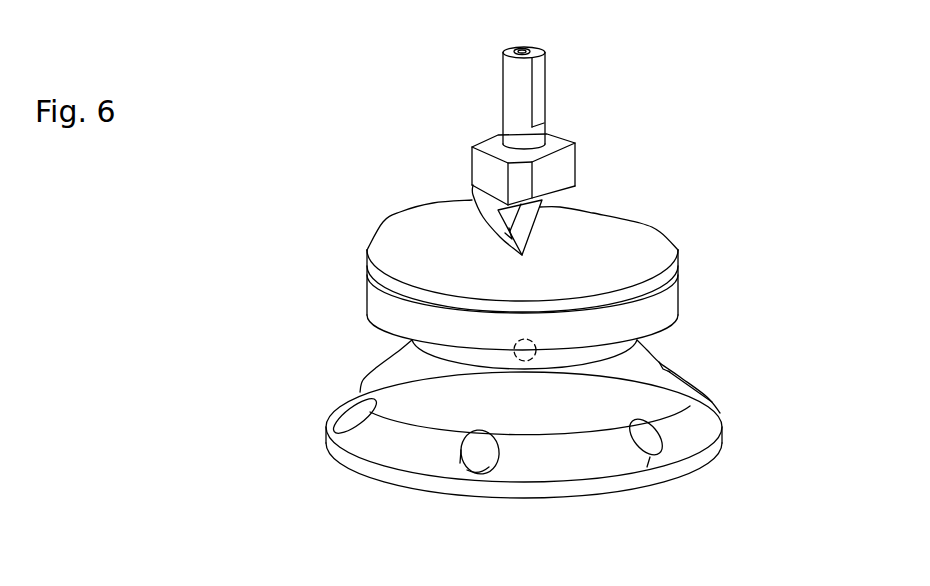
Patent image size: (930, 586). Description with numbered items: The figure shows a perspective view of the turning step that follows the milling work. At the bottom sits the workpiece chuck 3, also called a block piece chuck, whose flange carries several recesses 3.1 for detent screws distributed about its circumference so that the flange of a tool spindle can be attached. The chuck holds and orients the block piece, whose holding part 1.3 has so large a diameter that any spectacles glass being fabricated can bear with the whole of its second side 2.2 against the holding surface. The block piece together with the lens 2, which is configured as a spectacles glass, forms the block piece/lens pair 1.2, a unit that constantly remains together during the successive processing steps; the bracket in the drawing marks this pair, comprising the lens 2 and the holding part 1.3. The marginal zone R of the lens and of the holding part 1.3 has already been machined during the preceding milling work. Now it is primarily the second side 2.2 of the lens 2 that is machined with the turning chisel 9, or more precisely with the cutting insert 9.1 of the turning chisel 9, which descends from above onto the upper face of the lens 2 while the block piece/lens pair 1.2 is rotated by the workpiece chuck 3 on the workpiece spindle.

The turning chisel 9 is at (512, 95).
The cutting insert 9.1 is at (527, 230).
The lens 2 is at (378, 277).
The second side 2.2 is at (640, 230).
The block piece/lens pair 1.2 is at (703, 238).
The holding part 1.3 is at (398, 312).
The marginal zone R is at (342, 289).
The workpiece chuck 3 is at (382, 450).
The recesses 3.1 is at (466, 464).